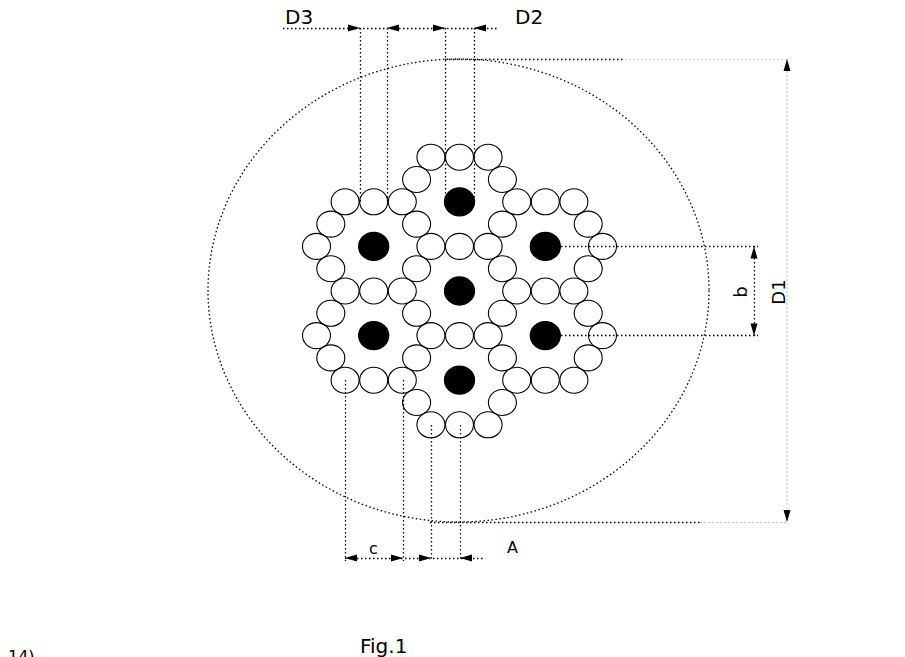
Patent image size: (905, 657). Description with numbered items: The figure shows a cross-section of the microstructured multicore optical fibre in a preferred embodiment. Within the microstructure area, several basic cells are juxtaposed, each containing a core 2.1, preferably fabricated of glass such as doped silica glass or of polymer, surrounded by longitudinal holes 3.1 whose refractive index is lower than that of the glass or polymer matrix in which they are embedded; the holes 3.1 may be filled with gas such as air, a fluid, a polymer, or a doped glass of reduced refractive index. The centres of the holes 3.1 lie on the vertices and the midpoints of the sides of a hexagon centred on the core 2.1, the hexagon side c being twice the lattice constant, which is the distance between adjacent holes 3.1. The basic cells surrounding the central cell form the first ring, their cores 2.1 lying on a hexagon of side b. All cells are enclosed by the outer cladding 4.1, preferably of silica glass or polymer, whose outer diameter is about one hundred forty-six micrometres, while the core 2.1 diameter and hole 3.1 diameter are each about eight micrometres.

The core 2.1 is at (372, 270).
The hole 3.1 is at (378, 291).
The cladding 4.1 is at (399, 290).